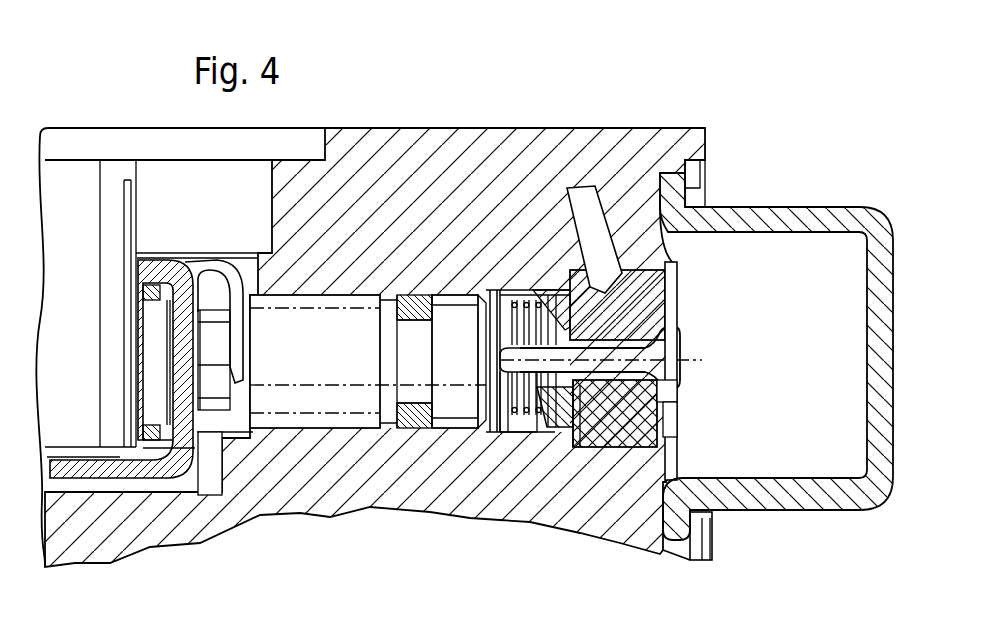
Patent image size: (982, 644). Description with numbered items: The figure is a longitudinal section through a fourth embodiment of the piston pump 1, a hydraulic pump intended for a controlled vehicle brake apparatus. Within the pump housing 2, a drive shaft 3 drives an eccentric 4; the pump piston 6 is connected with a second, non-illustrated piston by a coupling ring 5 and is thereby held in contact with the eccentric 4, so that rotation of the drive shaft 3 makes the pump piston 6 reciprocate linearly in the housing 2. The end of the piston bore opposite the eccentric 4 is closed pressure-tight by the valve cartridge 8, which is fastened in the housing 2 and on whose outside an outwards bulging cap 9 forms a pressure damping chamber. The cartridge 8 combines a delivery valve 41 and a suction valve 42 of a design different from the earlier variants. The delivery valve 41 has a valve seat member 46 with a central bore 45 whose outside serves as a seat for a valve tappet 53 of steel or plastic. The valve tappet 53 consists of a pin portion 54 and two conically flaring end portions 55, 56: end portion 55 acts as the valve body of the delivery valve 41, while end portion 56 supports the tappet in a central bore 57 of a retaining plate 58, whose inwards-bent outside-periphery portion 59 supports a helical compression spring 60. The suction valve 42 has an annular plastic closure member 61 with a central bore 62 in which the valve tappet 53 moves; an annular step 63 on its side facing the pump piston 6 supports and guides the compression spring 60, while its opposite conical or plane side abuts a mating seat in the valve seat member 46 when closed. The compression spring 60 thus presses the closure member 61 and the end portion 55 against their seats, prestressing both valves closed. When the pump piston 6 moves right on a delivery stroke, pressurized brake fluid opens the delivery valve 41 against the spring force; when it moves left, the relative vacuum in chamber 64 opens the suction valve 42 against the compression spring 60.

The piston pump 1 is at (725, 133).
The pump housing 2 is at (70, 537).
The drive shaft 3 is at (80, 197).
The eccentric 4 is at (122, 478).
The coupling ring 5 is at (213, 273).
The pump piston 6 is at (290, 398).
The valve cartridge 8 is at (673, 295).
The cap 9 is at (777, 220).
The delivery valve 41 is at (676, 330).
The suction valve 42 is at (560, 283).
The central bore 45 is at (680, 408).
The valve seat member 46 is at (653, 418).
The valve tappet 53 is at (683, 337).
The pin portion 54 is at (532, 417).
The end portion 55 is at (670, 372).
The end portion 56 is at (507, 363).
The central bore 57 is at (513, 300).
The retaining plate 58 is at (500, 285).
The outside-periphery portion 59 is at (478, 434).
The compression spring 60 is at (525, 320).
The closure member 61 is at (567, 427).
The central bore 62 is at (582, 388).
The annular step 63 is at (566, 412).
The chamber 64 is at (515, 422).